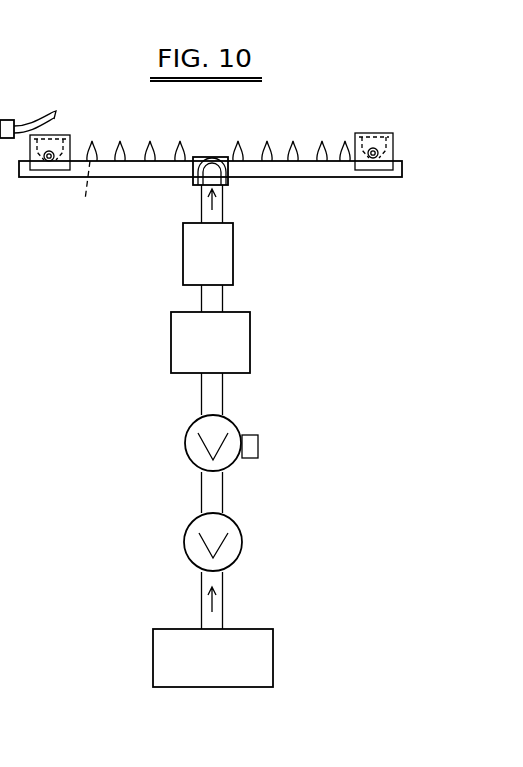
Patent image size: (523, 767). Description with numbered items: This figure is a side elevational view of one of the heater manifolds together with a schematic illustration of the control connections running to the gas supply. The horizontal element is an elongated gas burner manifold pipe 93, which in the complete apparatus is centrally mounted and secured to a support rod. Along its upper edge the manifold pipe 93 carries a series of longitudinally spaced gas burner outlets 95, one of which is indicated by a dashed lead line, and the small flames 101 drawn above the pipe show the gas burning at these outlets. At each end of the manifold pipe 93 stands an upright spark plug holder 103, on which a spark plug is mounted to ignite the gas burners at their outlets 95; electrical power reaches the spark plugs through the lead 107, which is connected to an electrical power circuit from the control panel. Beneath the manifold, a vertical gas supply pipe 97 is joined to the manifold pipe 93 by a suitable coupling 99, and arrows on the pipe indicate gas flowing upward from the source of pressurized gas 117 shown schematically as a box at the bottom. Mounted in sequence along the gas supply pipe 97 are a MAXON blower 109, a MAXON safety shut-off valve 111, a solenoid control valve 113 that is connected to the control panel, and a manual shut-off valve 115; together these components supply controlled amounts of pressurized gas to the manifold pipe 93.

The gas burner manifold pipe 93 is at (137, 171).
The gas burner outlet 95 is at (80, 193).
The gas supply pipe 97 is at (216, 205).
The coupling 99 is at (208, 158).
The burner flames 101 is at (293, 157).
The spark plug holder 103 is at (37, 170).
The lead 107 is at (50, 117).
The MAXON blower 109 is at (193, 260).
The MAXON safety shut-off valve 111 is at (185, 337).
The solenoid control valve 113 is at (185, 442).
The manual shut-off valve 115 is at (185, 532).
The source of pressurized gas 117 is at (153, 642).